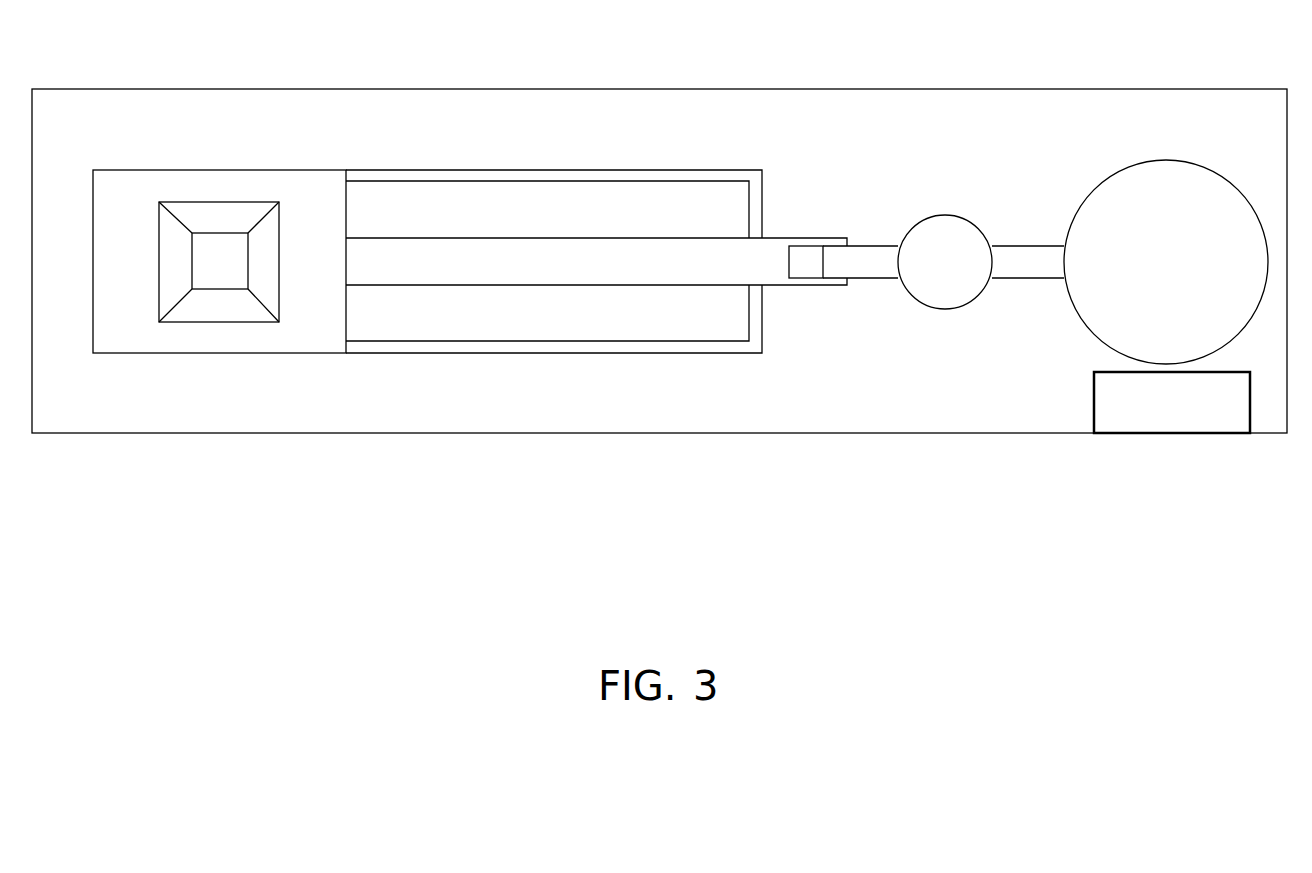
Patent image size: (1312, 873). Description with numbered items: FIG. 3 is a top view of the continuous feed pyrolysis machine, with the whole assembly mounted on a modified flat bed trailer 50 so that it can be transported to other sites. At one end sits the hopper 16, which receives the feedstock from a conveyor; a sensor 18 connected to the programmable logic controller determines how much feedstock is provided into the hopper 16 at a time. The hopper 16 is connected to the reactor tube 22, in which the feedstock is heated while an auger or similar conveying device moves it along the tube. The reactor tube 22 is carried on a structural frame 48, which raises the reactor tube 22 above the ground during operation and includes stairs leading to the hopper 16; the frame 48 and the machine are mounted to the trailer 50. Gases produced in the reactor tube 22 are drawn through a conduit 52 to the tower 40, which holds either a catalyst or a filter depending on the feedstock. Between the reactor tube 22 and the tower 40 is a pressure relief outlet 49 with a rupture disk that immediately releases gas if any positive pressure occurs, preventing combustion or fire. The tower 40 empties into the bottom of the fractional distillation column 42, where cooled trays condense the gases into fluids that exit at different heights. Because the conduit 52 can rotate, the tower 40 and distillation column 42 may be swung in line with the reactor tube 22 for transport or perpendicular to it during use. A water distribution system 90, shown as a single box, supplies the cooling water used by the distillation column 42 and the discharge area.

The flat bed trailer 50 is at (520, 99).
The hopper 16 is at (216, 215).
The sensor 18 is at (192, 262).
The structural frame 48 is at (411, 175).
The reactor tube 22 is at (532, 250).
The pressure relief outlet 49 is at (805, 262).
The conduit 52 is at (870, 250).
The tower 40 is at (946, 218).
The fractional distillation column 42 is at (1162, 165).
The water distribution system 90 is at (1129, 404).